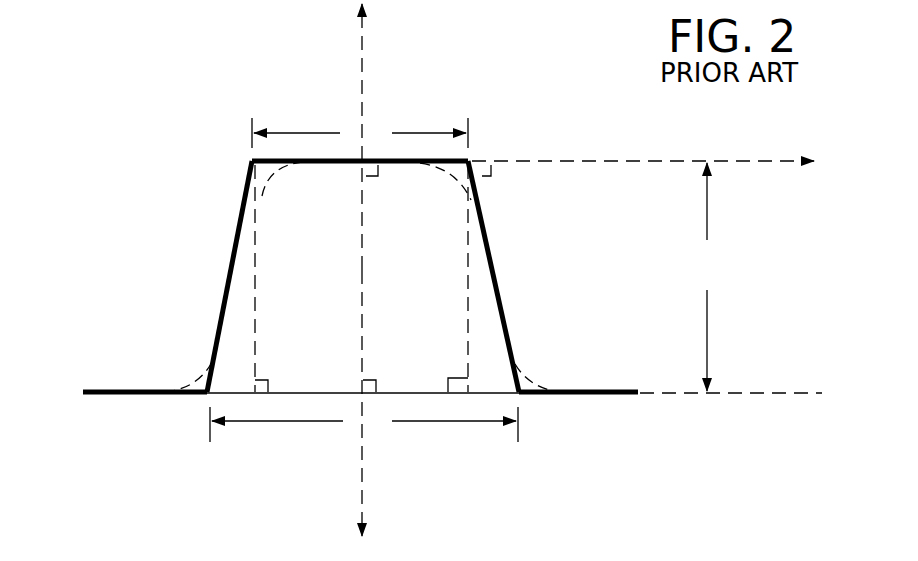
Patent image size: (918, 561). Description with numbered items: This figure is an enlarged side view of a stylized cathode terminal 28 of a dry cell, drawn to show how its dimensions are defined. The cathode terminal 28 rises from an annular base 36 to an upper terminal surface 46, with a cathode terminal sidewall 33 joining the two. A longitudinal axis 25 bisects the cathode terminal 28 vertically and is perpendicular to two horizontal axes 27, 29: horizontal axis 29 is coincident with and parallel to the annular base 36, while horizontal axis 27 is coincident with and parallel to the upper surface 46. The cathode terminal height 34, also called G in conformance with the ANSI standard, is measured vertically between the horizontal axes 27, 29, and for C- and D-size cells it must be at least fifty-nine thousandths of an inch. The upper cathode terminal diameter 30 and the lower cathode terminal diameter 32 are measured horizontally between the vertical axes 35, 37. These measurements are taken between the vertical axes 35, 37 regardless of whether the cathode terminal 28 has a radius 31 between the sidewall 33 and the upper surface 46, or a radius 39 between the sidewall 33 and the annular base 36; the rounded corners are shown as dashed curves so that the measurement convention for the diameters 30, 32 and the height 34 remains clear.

The longitudinal axis 25 is at (357, 42).
The horizontal axis 27 is at (747, 166).
The cathode terminal 28 is at (506, 282).
The horizontal axis 29 is at (777, 401).
The upper cathode terminal diameter 30 is at (360, 133).
The radius 31 is at (439, 177).
The lower cathode terminal diameter 32 is at (364, 424).
The cathode terminal sidewall 33 is at (227, 265).
The cathode terminal height 34 is at (706, 277).
The vertical axis 35 is at (263, 372).
The annular base 36 is at (118, 390).
The vertical axis 37 is at (458, 303).
The radius 39 is at (190, 377).
The upper terminal surface 46 is at (414, 159).